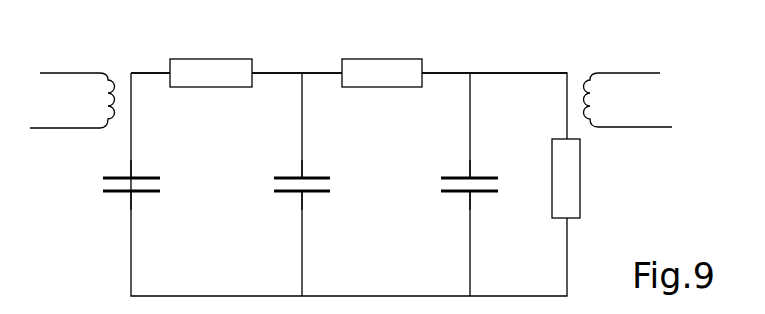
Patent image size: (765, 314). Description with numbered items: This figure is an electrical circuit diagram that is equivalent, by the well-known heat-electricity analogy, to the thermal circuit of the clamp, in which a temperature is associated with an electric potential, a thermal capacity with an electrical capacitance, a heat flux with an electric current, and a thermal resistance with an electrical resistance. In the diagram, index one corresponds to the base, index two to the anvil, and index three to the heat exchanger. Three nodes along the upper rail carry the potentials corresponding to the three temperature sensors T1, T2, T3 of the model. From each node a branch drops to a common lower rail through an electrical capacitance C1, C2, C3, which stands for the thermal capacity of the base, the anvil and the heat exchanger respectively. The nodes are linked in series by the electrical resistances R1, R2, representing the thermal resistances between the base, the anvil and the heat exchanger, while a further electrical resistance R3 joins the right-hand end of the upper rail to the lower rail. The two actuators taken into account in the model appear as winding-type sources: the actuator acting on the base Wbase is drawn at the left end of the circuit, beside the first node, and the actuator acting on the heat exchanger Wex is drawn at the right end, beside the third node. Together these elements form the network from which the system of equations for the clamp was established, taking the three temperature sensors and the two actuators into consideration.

The actuator acting on the base Wbase is at (67, 100).
The actuator acting on the heat exchanger Wex is at (628, 100).
The temperature sensor T1 is at (144, 56).
The temperature sensor T2 is at (297, 56).
The temperature sensor T3 is at (494, 56).
The electrical resistance R1 is at (211, 88).
The electrical resistance R2 is at (382, 88).
The electrical resistance R3 is at (584, 178).
The electrical capacitance C1 is at (116, 185).
The electrical capacitance C2 is at (285, 185).
The electrical capacitance C3 is at (453, 185).